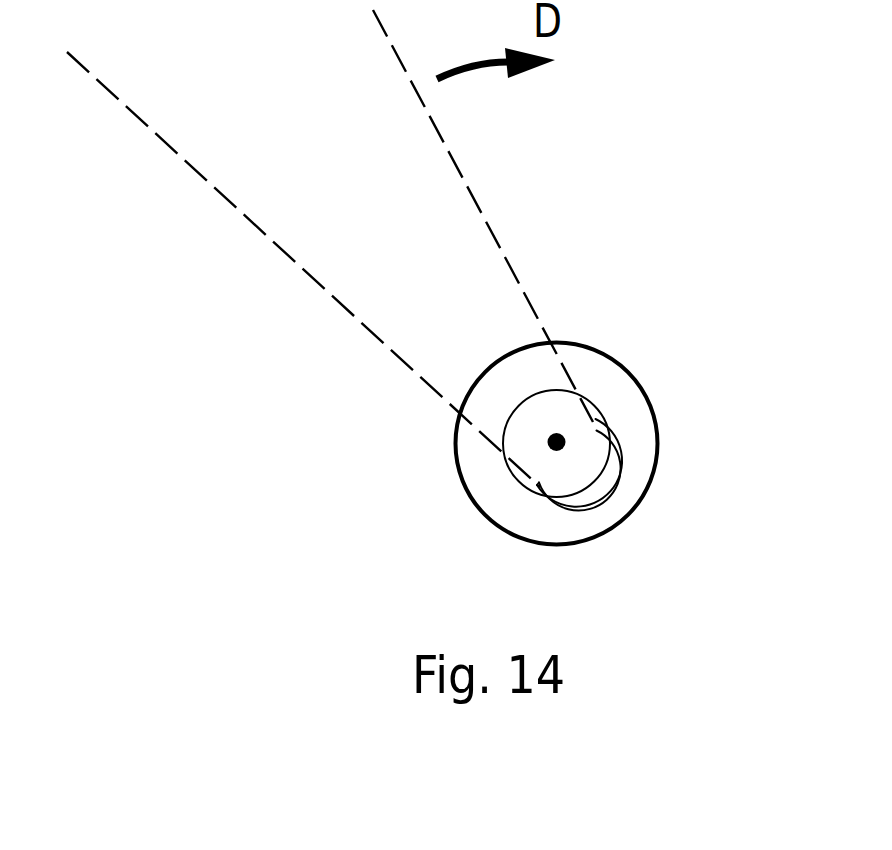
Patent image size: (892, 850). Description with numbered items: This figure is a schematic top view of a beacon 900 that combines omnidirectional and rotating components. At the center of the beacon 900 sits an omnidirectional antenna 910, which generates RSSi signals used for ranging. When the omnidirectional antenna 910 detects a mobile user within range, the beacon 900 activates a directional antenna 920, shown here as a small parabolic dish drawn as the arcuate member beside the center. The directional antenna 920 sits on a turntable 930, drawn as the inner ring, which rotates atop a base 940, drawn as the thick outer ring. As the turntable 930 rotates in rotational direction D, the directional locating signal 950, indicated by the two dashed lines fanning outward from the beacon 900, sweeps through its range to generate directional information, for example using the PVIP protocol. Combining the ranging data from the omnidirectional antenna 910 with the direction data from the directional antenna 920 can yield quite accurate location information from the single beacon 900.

The beacon 900 is at (558, 415).
The omnidirectional antenna 910 is at (548, 441).
The directional antenna 920 is at (600, 472).
The turntable 930 is at (610, 445).
The base 940 is at (500, 528).
The directional locating signal 950 is at (290, 106).